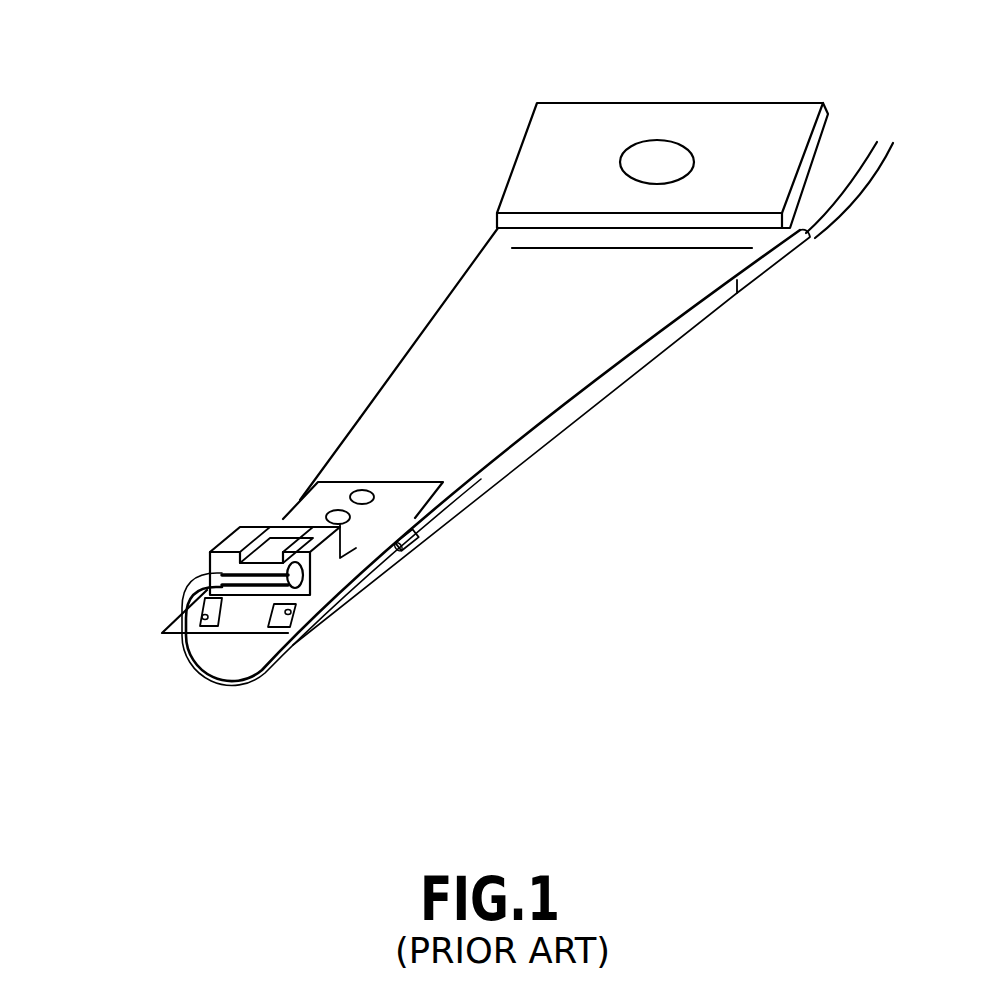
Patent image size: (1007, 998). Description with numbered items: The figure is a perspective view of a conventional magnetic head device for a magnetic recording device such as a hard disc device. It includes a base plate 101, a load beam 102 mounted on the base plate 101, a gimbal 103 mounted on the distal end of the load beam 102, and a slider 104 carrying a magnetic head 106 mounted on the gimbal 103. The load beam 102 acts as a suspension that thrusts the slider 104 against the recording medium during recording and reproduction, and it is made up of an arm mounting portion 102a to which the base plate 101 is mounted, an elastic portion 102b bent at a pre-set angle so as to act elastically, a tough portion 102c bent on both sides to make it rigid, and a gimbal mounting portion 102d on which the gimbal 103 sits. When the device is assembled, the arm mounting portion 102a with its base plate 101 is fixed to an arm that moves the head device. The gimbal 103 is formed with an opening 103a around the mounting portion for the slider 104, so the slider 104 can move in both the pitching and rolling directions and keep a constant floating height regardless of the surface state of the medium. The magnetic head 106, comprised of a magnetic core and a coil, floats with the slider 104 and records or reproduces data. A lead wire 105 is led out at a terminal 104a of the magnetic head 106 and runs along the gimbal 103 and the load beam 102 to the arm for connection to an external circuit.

The base plate 101 is at (760, 92).
The load beam 102 is at (597, 359).
The arm mounting portion 102a is at (510, 110).
The elastic portion 102b is at (470, 228).
The tough portion 102c is at (447, 275).
The gimbal mounting portion 102d is at (305, 452).
The gimbal 103 is at (375, 529).
The opening 103a is at (183, 638).
The slider 104 is at (192, 545).
The terminal 104a is at (222, 573).
The lead wire 105 is at (238, 690).
The magnetic head 106 is at (300, 575).